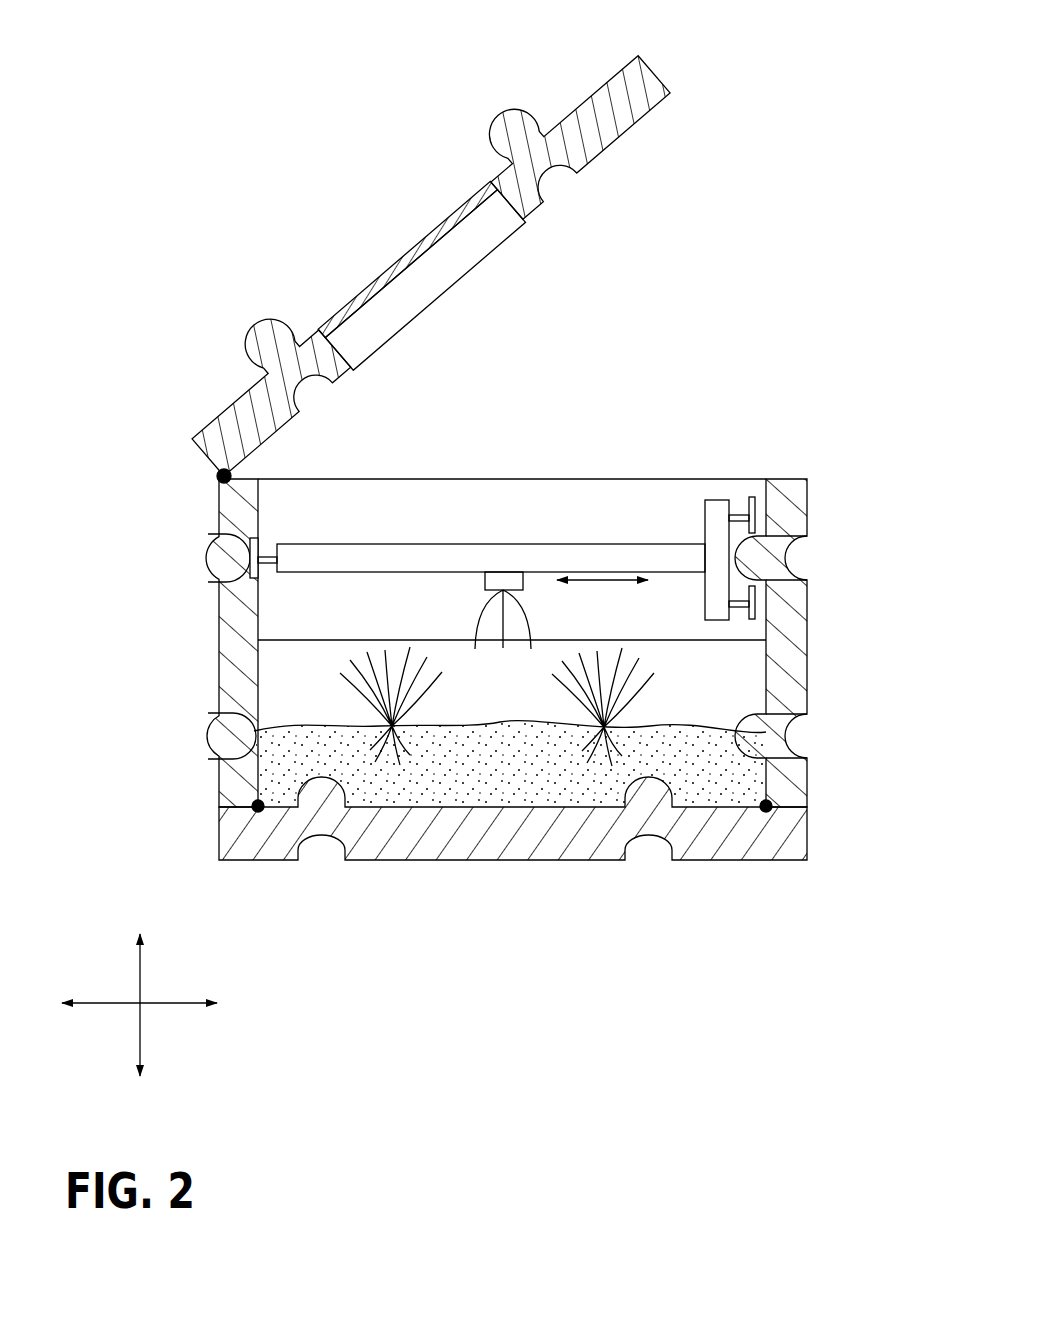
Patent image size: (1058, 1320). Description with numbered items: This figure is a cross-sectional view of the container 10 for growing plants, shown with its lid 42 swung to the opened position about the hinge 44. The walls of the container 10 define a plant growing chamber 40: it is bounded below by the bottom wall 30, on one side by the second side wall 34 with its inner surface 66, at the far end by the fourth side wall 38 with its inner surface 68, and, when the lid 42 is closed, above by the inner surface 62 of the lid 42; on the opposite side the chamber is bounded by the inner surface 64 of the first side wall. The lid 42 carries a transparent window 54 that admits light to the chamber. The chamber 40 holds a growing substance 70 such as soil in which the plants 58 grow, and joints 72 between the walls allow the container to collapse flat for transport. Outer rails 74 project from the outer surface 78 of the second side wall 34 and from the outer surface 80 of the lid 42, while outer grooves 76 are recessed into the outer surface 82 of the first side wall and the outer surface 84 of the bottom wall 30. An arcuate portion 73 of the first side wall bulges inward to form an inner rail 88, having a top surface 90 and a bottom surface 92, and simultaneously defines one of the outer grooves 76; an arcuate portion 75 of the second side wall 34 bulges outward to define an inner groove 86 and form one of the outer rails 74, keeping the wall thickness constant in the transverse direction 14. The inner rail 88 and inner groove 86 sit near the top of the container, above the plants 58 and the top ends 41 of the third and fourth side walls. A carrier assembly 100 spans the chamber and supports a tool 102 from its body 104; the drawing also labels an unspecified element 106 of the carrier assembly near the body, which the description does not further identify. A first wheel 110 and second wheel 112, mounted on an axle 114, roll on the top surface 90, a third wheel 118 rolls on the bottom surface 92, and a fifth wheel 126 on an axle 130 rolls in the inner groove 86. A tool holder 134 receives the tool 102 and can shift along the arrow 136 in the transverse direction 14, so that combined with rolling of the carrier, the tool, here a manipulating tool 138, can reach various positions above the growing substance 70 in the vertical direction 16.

The container 10 is at (185, 187).
The transverse direction 14 is at (110, 1005).
The vertical direction 16 is at (140, 970).
The bottom wall 30 is at (533, 862).
The second side wall 34 is at (108, 668).
The fourth side wall 38 is at (737, 610).
The plant growing chamber 40 is at (296, 672).
The top ends of the third and fourth side walls 41 is at (661, 640).
The lid 42 is at (362, 289).
The hinge 44 is at (217, 476).
The window 54 is at (405, 255).
The plants 58 is at (433, 657).
The inner surface of the lid 62 is at (623, 134).
The inner surface of the first side wall 64 is at (759, 533).
The inner surface of the second side wall 66 is at (295, 478).
The inner surface of the fourth side wall 68 is at (765, 693).
The growing substance 70 is at (469, 727).
The joints 72 is at (259, 805).
The arcuate portion of the first side wall 73 is at (187, 540).
The outer rails 74 is at (503, 116).
The arcuate portion of the second side wall 75 is at (817, 535).
The outer grooves 76 is at (797, 558).
The outer surface of the second side wall 78 is at (220, 627).
The outer surface of the lid 80 is at (235, 397).
The outer surface of the first side wall 82 is at (810, 640).
The outer surface of the bottom wall 84 is at (470, 861).
The inner groove 86 is at (241, 542).
The inner rail 88 is at (735, 552).
The top surface of the inner rail 90 is at (760, 533).
The bottom surface of the inner rail 92 is at (762, 618).
The carrier assembly 100 is at (567, 452).
The tool 102 is at (481, 606).
The body 104 is at (445, 478).
The upper chamber 106 is at (525, 478).
The first wheel 110 is at (753, 507).
The second wheel 112 is at (750, 622).
The axle 114 is at (737, 517).
The third wheel 118 is at (790, 633).
The fifth wheel 126 is at (262, 537).
The axle 130 is at (263, 563).
The tool holder 134 is at (485, 580).
The arrow 136 is at (600, 578).
The manipulating tool 138 is at (522, 608).